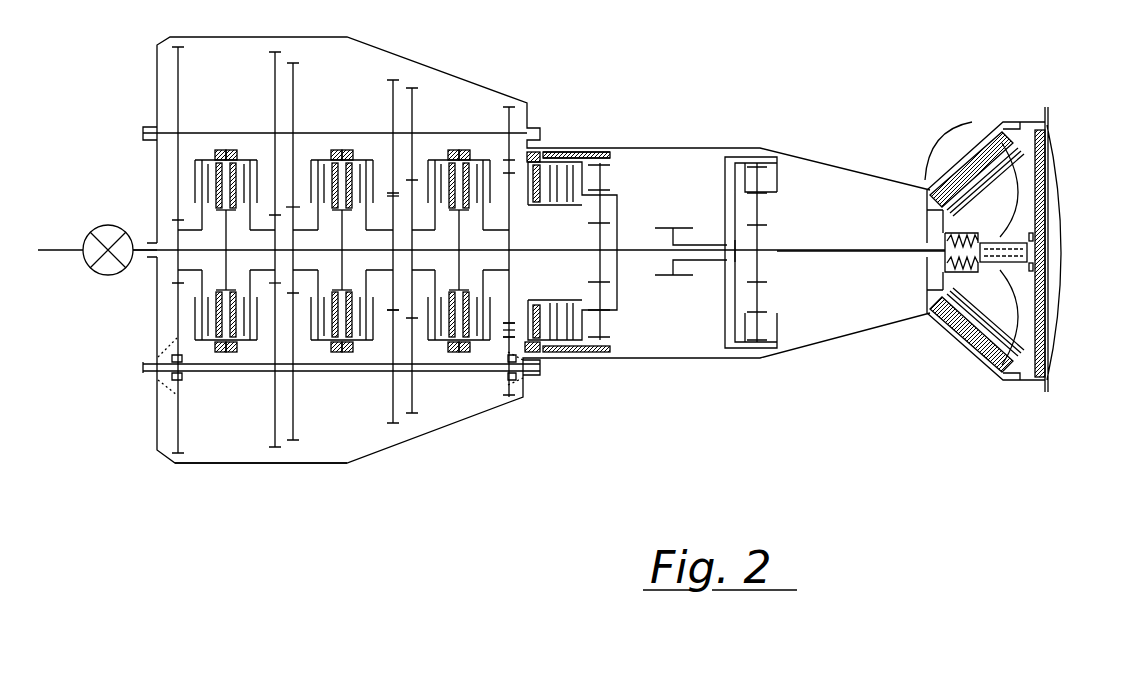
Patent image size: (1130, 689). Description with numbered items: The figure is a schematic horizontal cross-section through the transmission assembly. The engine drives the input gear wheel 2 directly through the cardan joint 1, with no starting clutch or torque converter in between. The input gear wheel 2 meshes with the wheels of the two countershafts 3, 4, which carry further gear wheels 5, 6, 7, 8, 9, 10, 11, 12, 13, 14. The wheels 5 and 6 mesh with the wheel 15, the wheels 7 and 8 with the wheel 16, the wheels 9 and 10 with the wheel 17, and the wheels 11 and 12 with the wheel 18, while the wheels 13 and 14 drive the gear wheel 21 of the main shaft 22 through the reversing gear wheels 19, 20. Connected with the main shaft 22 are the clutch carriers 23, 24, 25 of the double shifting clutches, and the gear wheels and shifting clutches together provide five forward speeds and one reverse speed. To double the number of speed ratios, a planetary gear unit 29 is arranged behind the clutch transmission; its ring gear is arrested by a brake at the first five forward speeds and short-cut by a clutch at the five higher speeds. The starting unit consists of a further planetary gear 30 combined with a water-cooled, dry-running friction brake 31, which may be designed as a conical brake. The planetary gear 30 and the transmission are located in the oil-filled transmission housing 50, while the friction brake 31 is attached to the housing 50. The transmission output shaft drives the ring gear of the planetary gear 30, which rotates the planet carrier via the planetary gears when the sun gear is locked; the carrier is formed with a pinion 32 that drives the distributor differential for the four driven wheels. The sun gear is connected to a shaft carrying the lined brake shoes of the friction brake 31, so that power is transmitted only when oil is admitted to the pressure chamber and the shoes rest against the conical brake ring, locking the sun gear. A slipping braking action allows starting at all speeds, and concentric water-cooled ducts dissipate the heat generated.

The cardan joint 1 is at (92, 240).
The input gear wheel 2 is at (173, 242).
The countershaft 3 is at (165, 130).
The countershaft 4 is at (160, 362).
The gear wheel 5 is at (275, 62).
The gear wheel 6 is at (272, 430).
The gear wheel 7 is at (294, 66).
The gear wheel 8 is at (293, 386).
The gear wheel 9 is at (392, 97).
The gear wheel 10 is at (390, 384).
The gear wheel 11 is at (414, 92).
The gear wheel 12 is at (413, 387).
The gear wheel 13 is at (513, 107).
The gear wheel 14 is at (503, 392).
The wheel 15 is at (277, 282).
The wheel 16 is at (294, 217).
The wheel 17 is at (398, 210).
The wheel 18 is at (405, 280).
The reversing gear wheel 19 is at (513, 168).
The reversing gear wheel 20 is at (508, 328).
The gear wheel 21 is at (510, 284).
The main shaft 22 is at (511, 282).
The clutch carrier 23 is at (225, 227).
The clutch carrier 24 is at (343, 222).
The clutch carrier 25 is at (460, 223).
The planetary gear unit 29 is at (603, 177).
The planetary gear 30 is at (757, 178).
The friction brake 31 is at (927, 178).
The pinion 32 is at (663, 227).
The transmission housing 50 is at (173, 465).